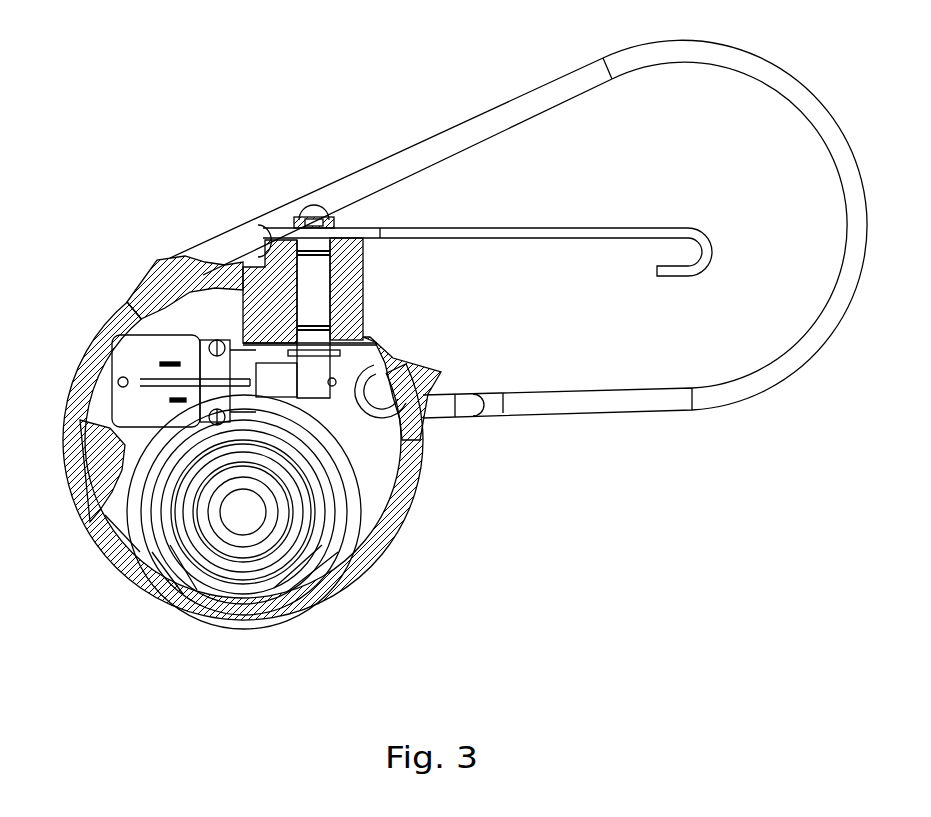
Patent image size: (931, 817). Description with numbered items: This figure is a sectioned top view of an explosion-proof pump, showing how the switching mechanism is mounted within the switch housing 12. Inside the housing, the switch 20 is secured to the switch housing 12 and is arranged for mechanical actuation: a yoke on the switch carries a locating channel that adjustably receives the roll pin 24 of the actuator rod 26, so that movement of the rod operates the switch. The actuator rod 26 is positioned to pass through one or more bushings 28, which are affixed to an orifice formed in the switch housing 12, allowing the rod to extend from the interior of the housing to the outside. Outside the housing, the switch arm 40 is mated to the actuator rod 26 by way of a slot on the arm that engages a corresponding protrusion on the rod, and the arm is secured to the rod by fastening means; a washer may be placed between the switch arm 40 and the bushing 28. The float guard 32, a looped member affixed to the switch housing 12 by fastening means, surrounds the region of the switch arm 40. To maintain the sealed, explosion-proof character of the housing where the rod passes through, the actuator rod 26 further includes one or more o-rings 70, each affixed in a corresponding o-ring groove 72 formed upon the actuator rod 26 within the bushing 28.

The switch housing 12 is at (365, 570).
The switch 20 is at (140, 335).
The roll pin 24 is at (255, 415).
The actuator rod 26 is at (363, 293).
The bushing 28 is at (262, 282).
The float guard 32 is at (490, 109).
The switch arm 40 is at (538, 228).
The o-ring 70 is at (363, 255).
The o-ring groove 72 is at (292, 228).